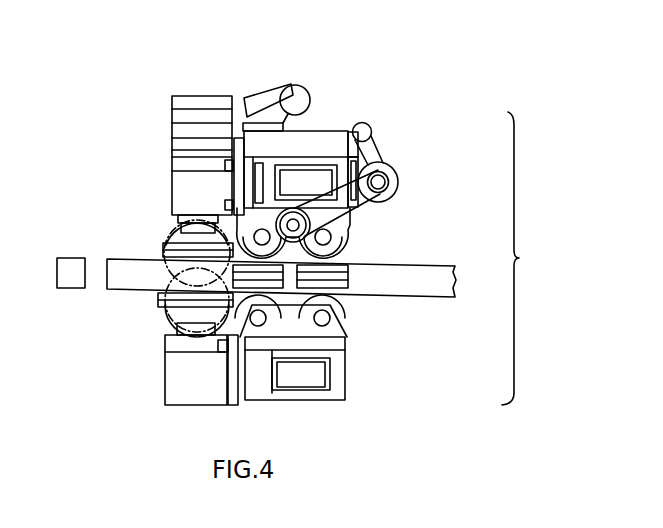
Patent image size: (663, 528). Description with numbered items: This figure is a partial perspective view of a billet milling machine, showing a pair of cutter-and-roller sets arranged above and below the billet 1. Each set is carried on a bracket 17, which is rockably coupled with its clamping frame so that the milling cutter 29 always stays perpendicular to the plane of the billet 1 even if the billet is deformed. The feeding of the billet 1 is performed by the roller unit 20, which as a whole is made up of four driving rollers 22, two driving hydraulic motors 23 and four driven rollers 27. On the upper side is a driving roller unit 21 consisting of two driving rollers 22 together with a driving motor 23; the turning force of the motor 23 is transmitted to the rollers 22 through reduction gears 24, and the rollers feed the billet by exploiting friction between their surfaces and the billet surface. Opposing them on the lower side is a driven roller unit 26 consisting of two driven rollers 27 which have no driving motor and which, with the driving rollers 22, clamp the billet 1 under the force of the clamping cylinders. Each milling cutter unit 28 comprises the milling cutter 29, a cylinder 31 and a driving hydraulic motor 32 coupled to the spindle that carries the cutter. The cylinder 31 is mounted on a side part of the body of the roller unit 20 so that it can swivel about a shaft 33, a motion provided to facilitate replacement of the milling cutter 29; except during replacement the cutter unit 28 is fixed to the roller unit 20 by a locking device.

The billet 1 is at (435, 271).
The bracket 17 is at (240, 138).
The roller unit 20 is at (530, 258).
The driving roller unit 21 is at (407, 145).
The driving roller 22 is at (348, 237).
The driving motor 23 is at (372, 136).
The reduction gears 24 is at (398, 172).
The driven roller unit 26 is at (382, 363).
The driven roller 27 is at (347, 328).
The milling cutter unit 28 is at (162, 103).
The milling cutter 29 is at (162, 247).
The cylinder 31 is at (172, 182).
The driving hydraulic motor 32 is at (172, 125).
The shaft 33 is at (228, 182).